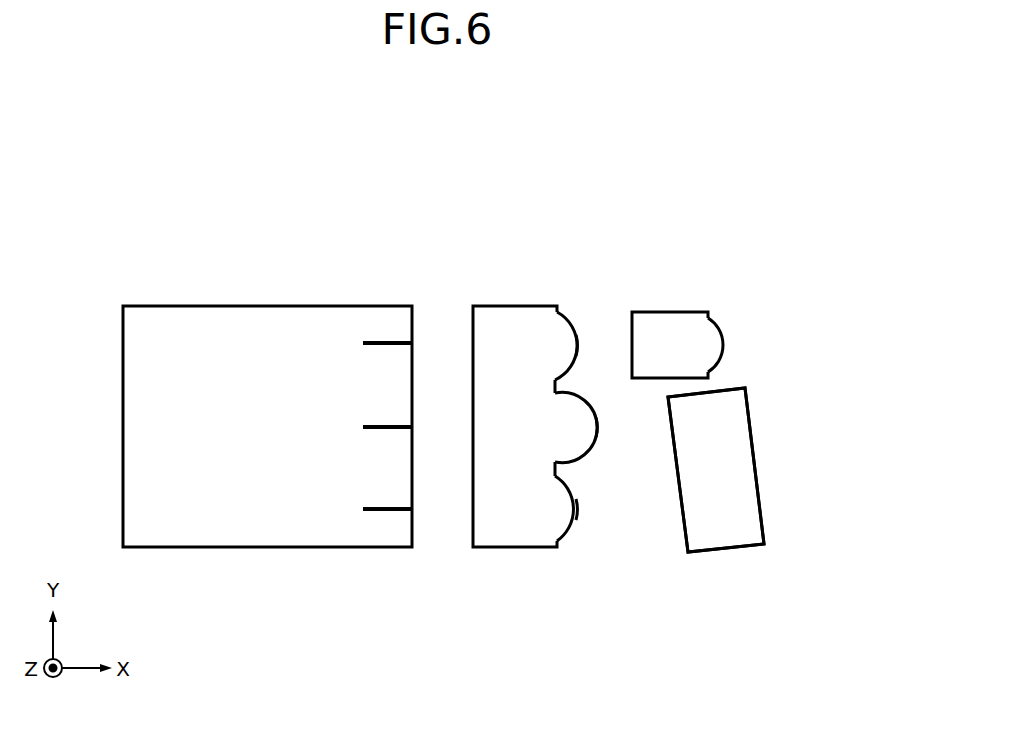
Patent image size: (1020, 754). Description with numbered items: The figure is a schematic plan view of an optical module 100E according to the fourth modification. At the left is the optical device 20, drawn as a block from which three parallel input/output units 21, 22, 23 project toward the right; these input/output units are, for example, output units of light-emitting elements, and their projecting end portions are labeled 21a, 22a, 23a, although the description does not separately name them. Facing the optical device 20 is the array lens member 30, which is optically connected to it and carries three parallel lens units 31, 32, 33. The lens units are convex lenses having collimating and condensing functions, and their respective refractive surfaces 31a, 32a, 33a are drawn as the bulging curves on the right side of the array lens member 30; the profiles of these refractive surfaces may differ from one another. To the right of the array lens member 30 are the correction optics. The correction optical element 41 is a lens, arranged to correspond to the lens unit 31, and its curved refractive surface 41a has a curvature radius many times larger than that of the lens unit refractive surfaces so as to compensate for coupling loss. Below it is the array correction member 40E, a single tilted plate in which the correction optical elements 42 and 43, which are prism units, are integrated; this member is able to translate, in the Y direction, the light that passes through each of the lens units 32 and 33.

The optical module 100E is at (724, 160).
The optical device 20 is at (188, 296).
The input/output unit 21 is at (385, 343).
The tip of first protrusion 21a is at (413, 341).
The input/output unit 22 is at (375, 428).
The tip of second protrusion 22a is at (413, 428).
The input/output unit 23 is at (378, 511).
The tip of third protrusion 23a is at (413, 512).
The array lens member 30 is at (485, 296).
The lens unit 31 is at (565, 343).
The refractive surface 31a is at (577, 345).
The lens unit 32 is at (575, 423).
The refractive surface 32a is at (597, 427).
The lens unit 33 is at (563, 507).
The refractive surface 33a is at (577, 509).
The array correction member 40E is at (742, 451).
The correction optical element 41 is at (734, 329).
The refractive surface 41a is at (724, 347).
The correction optical element 42 is at (727, 431).
The correction optical element 43 is at (737, 500).